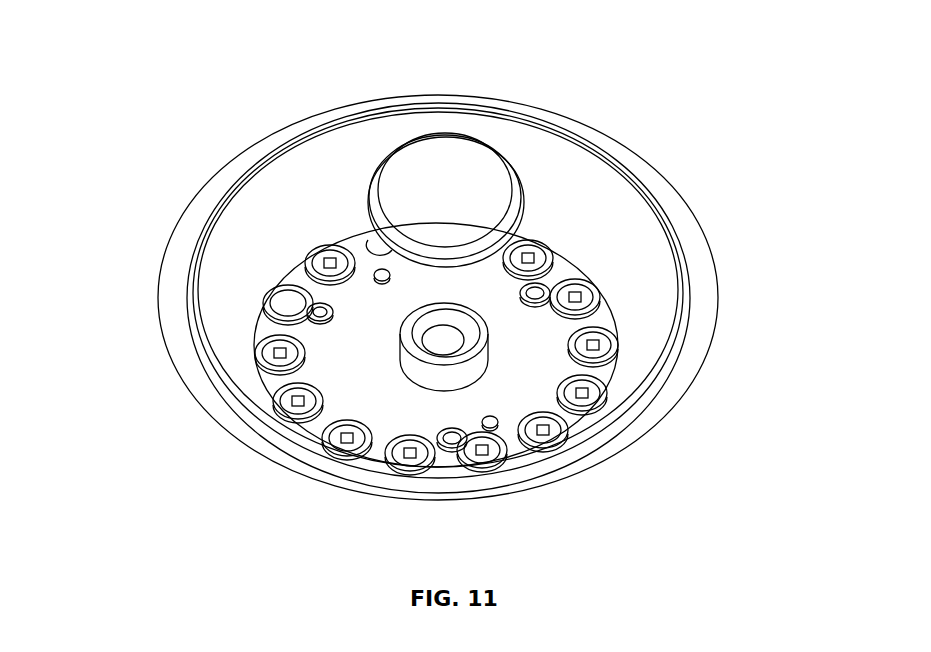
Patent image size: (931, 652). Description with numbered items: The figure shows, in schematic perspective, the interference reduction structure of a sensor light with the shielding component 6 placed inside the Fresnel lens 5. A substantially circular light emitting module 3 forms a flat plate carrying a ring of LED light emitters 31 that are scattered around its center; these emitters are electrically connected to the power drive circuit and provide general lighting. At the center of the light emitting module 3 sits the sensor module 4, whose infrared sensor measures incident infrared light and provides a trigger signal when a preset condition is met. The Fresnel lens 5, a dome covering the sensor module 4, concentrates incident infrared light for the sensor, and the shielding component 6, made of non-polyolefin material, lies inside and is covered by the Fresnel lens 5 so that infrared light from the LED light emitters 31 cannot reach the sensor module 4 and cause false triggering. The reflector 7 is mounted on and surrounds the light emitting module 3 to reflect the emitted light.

The light emitting module 3 is at (345, 380).
The LED light emitter 31 is at (290, 302).
The sensor module 4 is at (447, 340).
The Fresnel lens 5 is at (457, 167).
The shielding component 6 is at (458, 375).
The reflector 7 is at (645, 262).